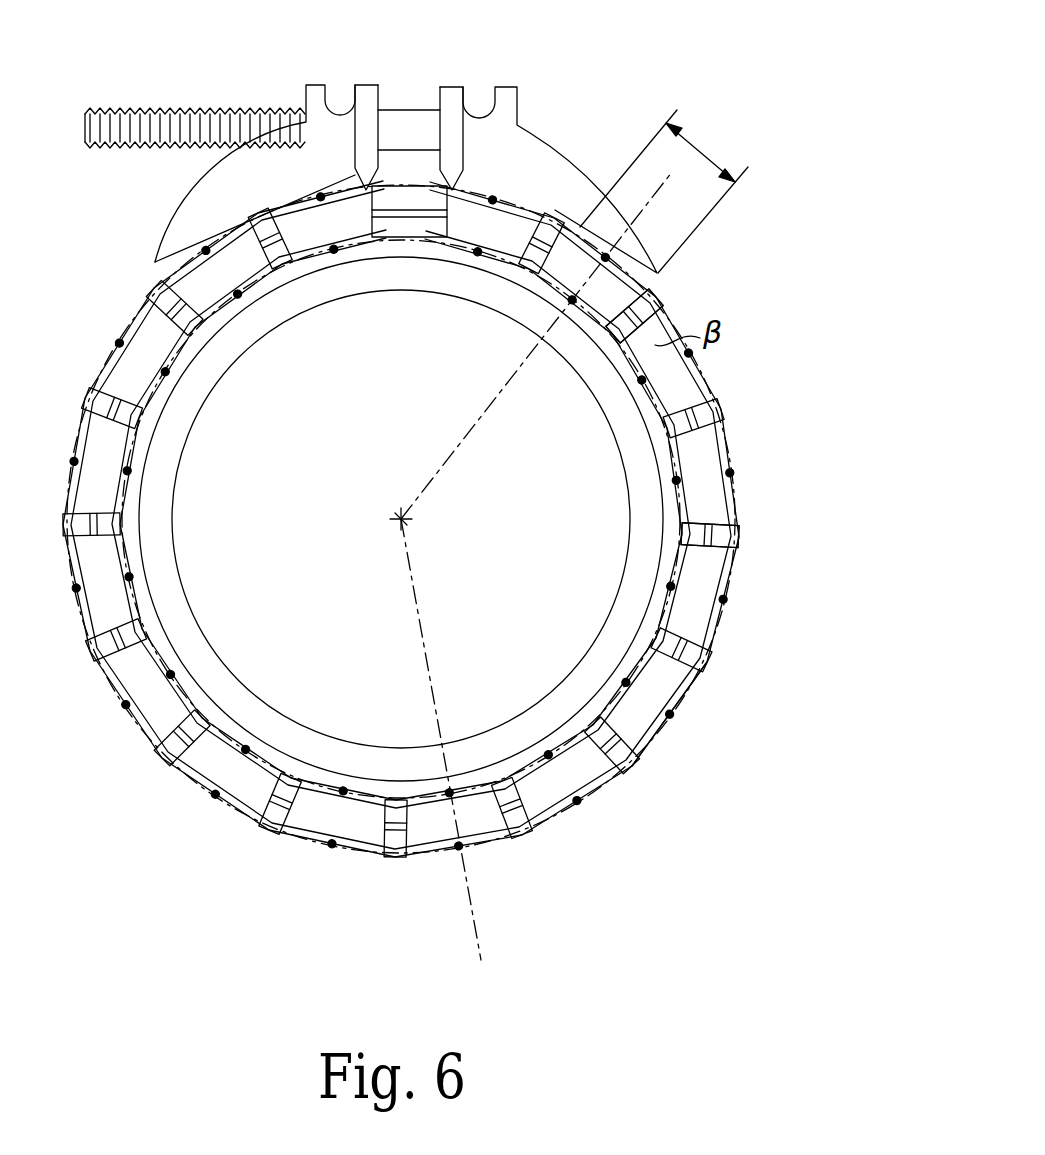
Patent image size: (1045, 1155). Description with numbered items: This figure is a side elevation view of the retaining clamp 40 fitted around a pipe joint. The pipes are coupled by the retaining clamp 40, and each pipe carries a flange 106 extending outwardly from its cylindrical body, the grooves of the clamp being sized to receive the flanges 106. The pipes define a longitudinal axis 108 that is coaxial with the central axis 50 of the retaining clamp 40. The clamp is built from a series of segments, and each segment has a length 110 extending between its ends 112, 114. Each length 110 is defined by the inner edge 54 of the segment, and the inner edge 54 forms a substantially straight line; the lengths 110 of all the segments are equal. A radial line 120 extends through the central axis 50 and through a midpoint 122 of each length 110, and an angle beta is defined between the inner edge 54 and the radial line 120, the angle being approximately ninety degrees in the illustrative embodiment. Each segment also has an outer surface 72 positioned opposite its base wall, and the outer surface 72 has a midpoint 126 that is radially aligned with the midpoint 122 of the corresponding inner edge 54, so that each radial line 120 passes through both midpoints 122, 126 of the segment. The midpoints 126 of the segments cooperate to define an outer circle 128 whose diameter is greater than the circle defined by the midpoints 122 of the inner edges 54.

The retaining clamp 40 is at (630, 85).
The length 110 is at (700, 150).
The outer surface 72 is at (600, 228).
The midpoint 126 is at (657, 300).
The midpoint 122 is at (332, 250).
The end 114 is at (548, 292).
The inner edge 54 is at (612, 338).
The end 112 is at (612, 352).
The radial line 120 is at (447, 463).
The central axis 50 is at (408, 522).
The longitudinal axis 108 is at (397, 523).
The flange 106 is at (732, 542).
The outer circle 128 is at (690, 688).